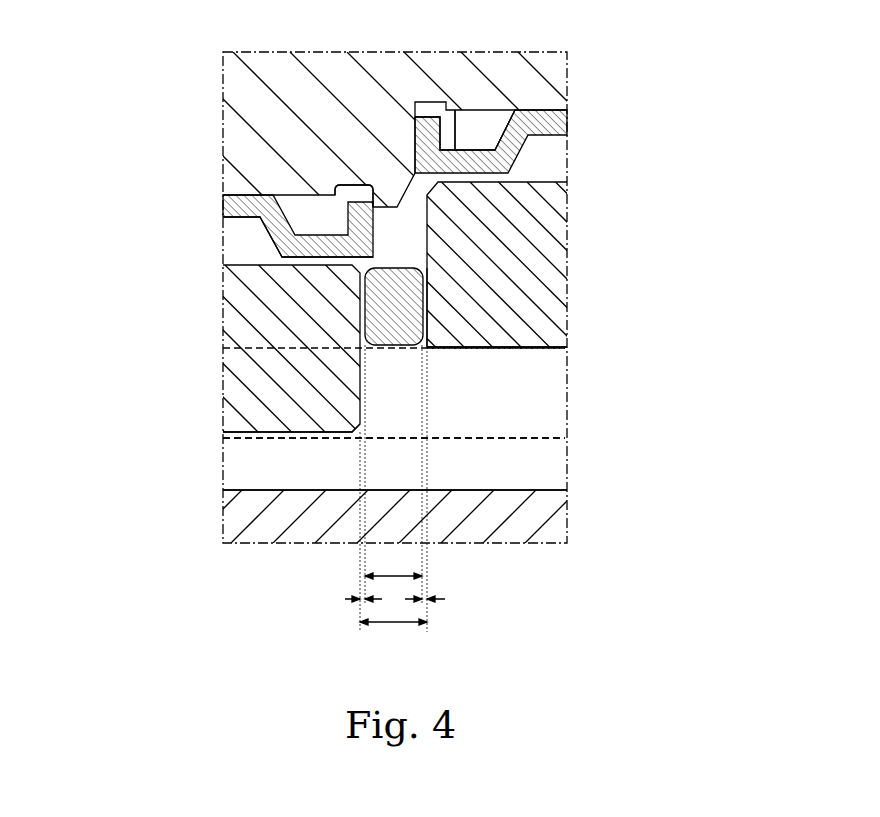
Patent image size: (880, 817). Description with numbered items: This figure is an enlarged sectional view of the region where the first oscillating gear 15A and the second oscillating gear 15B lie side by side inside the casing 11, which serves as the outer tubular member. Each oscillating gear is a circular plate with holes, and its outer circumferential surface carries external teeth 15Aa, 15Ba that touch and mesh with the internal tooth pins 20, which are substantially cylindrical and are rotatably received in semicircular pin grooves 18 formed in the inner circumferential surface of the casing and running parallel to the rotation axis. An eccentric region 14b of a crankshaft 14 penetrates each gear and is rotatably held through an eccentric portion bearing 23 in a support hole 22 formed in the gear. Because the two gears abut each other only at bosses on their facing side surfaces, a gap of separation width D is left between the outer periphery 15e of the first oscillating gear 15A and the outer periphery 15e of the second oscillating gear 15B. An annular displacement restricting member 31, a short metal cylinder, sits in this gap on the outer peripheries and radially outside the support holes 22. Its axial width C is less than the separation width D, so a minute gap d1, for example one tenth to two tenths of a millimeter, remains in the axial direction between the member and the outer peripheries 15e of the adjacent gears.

The crankshaft 14 is at (574, 75).
The eccentric region 14b is at (478, 122).
The eccentric portion bearing 23 is at (240, 210).
The support hole 22 is at (245, 228).
The first oscillating gear 15A is at (216, 280).
The external teeth 15Aa is at (258, 434).
The outer periphery 15e is at (365, 293).
The displacement restricting member 31 is at (435, 268).
The second oscillating gear 15B is at (574, 208).
The external teeth 15Ba is at (487, 357).
The internal tooth pin 20 is at (525, 367).
The pin groove 18 is at (540, 408).
The casing 11 is at (573, 549).
The width of the displacement restricting member C is at (397, 574).
The separation width D is at (393, 638).
The minute gap d1 is at (345, 602).